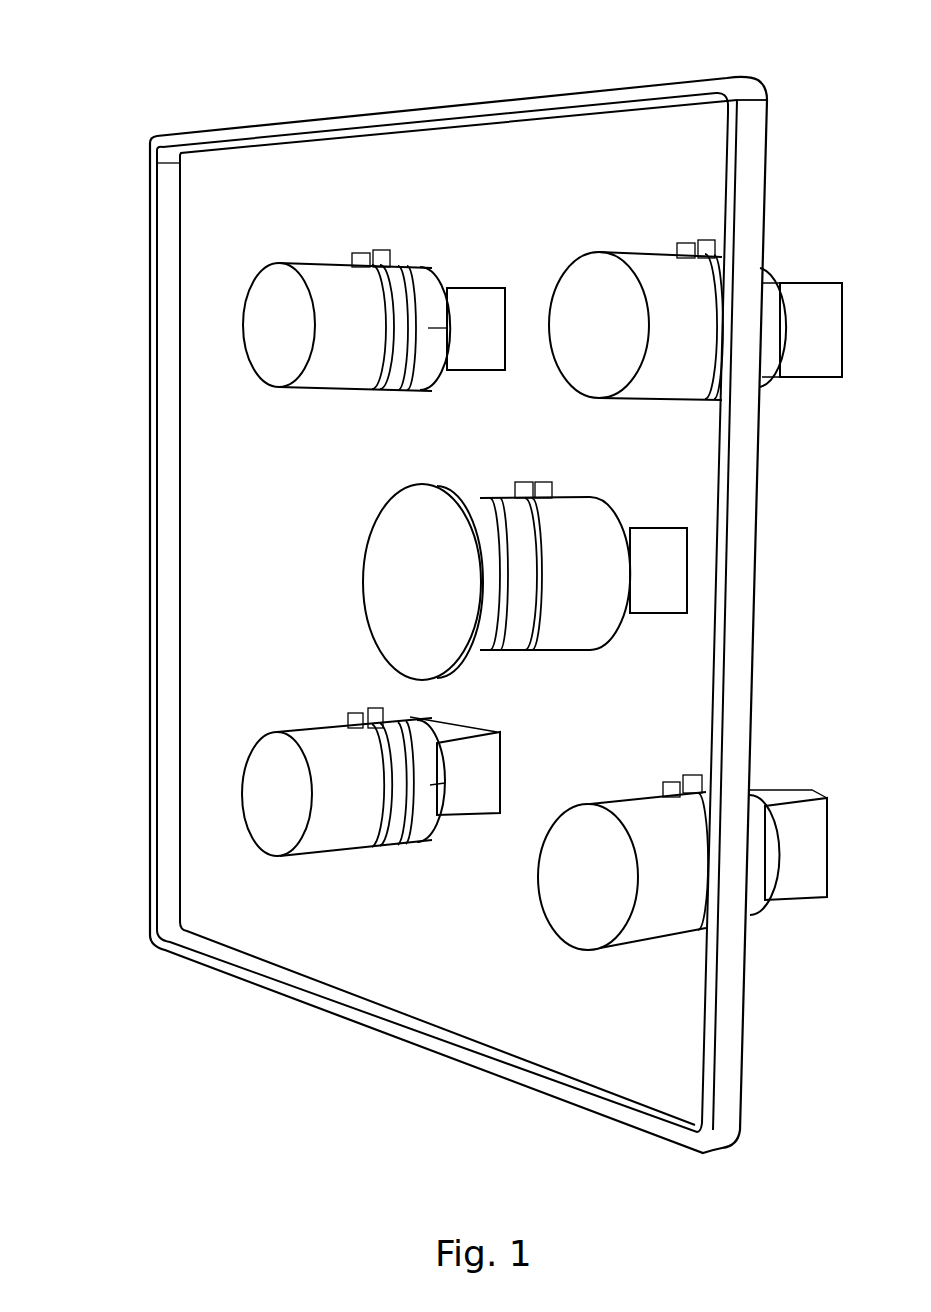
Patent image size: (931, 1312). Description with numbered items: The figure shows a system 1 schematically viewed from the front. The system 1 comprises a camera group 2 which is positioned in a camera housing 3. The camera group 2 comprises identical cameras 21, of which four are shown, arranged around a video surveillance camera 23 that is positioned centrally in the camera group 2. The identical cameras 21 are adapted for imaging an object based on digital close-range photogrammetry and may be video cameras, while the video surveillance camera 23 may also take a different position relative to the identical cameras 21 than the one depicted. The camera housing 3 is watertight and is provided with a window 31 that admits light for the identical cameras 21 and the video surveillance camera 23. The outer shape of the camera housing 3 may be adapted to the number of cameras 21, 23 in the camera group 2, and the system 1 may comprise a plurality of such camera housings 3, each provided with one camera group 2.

The system 1 is at (200, 110).
The camera group 2 is at (280, 103).
The camera housing 3 is at (158, 175).
The identical cameras 21 is at (263, 323).
The video surveillance camera 23 is at (417, 580).
The window 31 is at (264, 634).